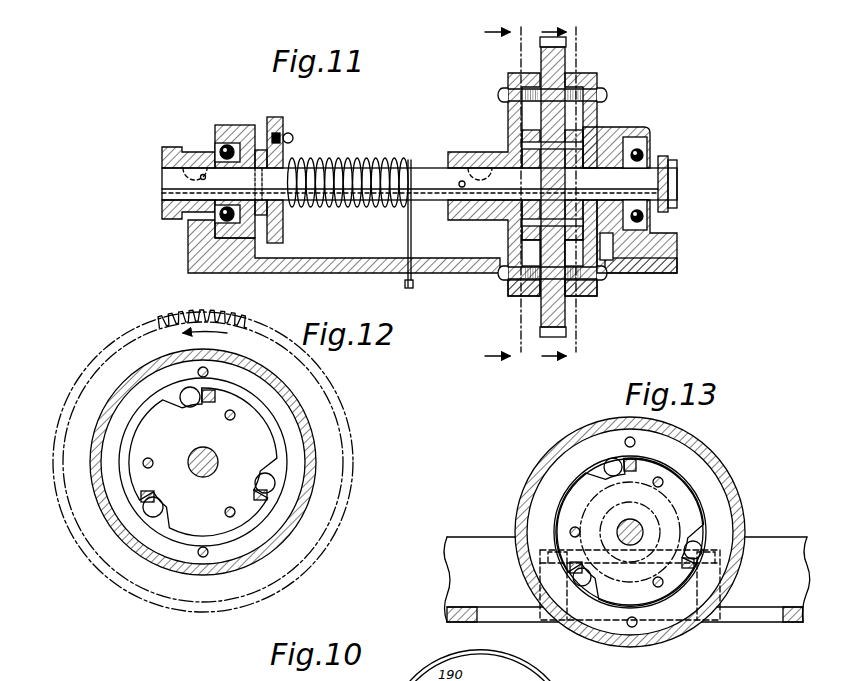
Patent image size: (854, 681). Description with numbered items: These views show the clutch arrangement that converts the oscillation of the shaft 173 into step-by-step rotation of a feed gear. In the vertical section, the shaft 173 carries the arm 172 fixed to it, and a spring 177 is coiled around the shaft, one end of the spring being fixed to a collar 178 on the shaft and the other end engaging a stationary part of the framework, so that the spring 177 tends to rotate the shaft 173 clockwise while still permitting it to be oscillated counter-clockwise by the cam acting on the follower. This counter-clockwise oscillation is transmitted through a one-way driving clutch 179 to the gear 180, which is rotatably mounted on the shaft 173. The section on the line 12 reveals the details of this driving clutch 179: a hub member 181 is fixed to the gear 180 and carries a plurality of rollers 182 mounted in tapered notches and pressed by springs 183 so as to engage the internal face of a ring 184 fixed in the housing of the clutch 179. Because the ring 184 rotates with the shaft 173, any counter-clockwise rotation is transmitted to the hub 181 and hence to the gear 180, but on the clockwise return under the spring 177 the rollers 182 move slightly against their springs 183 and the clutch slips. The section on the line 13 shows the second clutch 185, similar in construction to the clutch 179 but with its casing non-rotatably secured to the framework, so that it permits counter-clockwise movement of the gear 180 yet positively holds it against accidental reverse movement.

In FIG. 11, the section line 12— 12 is at (508, 195).
In FIG. 11, the section line 13— 13 is at (562, 192).
In FIG. 11, the arm 172 is at (180, 147).
In FIG. 11, the shaft 173 is at (425, 170).
In FIG. 12, the shaft 173 is at (211, 455).
In FIG. 13, the shaft 173 is at (636, 518).
In FIG. 11, the spring 177 is at (357, 162).
In FIG. 11, the collar 178 is at (279, 122).
In FIG. 11, the one-way driving clutch 179 is at (512, 136).
In FIG. 12, the one-way driving clutch 179 is at (317, 453).
In FIG. 11, the gear 180 is at (568, 312).
In FIG. 12, the gear 180 is at (246, 319).
In FIG. 11, the hub member 181 is at (518, 252).
In FIG. 12, the hub member 181 is at (146, 425).
In FIG. 12, the rollers 182 is at (186, 390).
In FIG. 12, the springs 183 is at (208, 389).
In FIG. 11, the ring 184 is at (510, 298).
In FIG. 12, the ring 184 is at (238, 548).
In FIG. 11, the second clutch 185 is at (622, 127).
In FIG. 13, the second clutch 185 is at (724, 470).